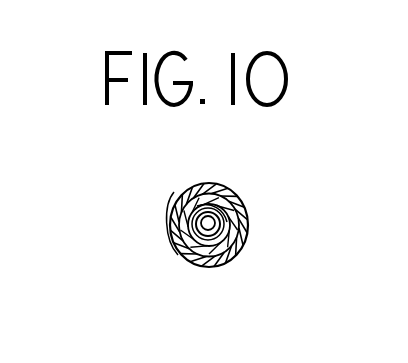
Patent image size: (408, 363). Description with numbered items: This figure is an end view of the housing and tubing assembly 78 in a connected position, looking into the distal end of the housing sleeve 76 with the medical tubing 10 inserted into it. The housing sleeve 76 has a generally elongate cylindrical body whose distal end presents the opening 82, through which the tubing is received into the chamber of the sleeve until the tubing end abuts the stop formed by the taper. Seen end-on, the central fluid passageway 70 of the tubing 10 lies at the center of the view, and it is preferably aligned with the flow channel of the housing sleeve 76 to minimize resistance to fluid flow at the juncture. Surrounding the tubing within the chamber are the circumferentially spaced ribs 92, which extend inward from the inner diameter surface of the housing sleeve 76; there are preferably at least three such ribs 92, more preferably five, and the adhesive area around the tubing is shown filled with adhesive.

The housing and tubing assembly 78 is at (248, 171).
The opening 82 is at (188, 214).
The housing sleeve 76 is at (172, 235).
The ribs 92 is at (239, 246).
The fluid passageway 70 is at (213, 222).
The medical tubing 10 is at (197, 245).